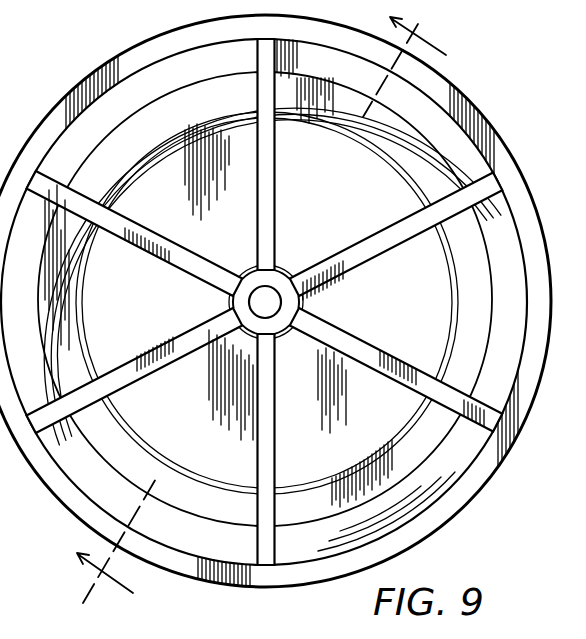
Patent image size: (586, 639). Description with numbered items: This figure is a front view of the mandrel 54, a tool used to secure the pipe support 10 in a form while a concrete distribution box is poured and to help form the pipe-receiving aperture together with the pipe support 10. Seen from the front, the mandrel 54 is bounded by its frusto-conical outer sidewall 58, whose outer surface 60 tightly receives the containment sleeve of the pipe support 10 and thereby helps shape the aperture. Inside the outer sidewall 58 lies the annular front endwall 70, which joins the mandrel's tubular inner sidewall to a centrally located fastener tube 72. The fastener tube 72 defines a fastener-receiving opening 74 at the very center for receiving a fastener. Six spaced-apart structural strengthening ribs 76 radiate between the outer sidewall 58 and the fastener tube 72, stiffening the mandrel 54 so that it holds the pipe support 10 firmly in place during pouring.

The pipe support 10 is at (279, 316).
The mandrel 54 is at (520, 452).
The frusto-conical outer sidewall 58 is at (152, 52).
The outer surface 60 is at (133, 143).
The annular front endwall 70 is at (383, 187).
The fastener tube 72 is at (301, 301).
The fastener-receiving opening 74 is at (249, 303).
The structural strengthening ribs 76 is at (166, 236).